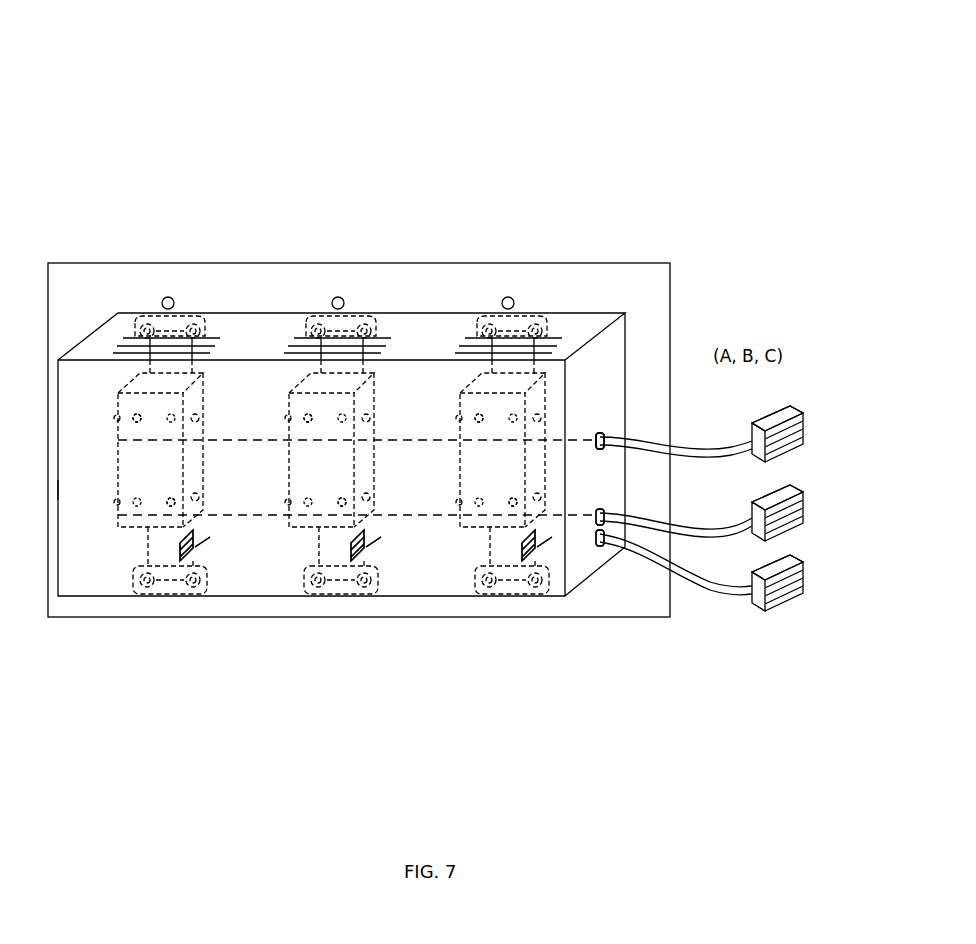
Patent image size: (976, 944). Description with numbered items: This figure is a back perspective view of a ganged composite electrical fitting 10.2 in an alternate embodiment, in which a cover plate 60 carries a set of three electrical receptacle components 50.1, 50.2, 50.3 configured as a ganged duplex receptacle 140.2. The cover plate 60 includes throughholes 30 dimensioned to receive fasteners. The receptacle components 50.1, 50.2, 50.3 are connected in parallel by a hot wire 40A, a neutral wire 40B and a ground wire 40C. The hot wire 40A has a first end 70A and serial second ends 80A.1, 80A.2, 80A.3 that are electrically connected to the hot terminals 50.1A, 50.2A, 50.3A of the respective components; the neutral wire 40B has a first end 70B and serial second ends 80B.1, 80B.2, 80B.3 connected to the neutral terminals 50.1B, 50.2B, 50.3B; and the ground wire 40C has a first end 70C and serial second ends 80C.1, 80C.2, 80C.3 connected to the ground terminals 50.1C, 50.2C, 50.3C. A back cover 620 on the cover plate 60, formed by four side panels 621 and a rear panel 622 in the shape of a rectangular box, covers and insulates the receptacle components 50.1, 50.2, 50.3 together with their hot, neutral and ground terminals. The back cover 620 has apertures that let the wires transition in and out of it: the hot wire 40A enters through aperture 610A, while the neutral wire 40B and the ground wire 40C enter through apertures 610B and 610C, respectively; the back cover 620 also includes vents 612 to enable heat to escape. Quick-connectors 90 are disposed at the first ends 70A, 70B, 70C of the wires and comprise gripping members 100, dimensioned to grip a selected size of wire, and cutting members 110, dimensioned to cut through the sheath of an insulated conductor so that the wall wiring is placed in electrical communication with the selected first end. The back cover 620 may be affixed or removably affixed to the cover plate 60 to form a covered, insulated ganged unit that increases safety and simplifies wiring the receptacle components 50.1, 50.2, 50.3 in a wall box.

The ganged duplex receptacle 140.2 is at (105, 95).
The ganged composite electrical fitting 10.2 is at (121, 19).
The cover plate 60 is at (643, 278).
The vents 612 is at (132, 338).
The throughholes 30 is at (170, 297).
The electrical receptacle component 50.1 is at (172, 476).
The electrical receptacle component 50.2 is at (343, 476).
The electrical receptacle component 50.3 is at (514, 476).
The hot terminal 50.1A is at (137, 418).
The serial second end 80A.1 is at (124, 593).
The neutral terminal 50.1B is at (171, 502).
The serial second end 80B.1 is at (175, 659).
The ground terminal 50.1C is at (195, 548).
The serial second end 80C.1 is at (213, 616).
The hot terminal 50.2A is at (308, 418).
The serial second end 80A.2 is at (274, 586).
The neutral terminal 50.2B is at (342, 502).
The serial second end 80B.2 is at (318, 652).
The ground terminal 50.2C is at (366, 548).
The serial second end 80C.2 is at (384, 616).
The hot terminal 50.3A is at (479, 418).
The serial second end 80A.3 is at (444, 586).
The neutral terminal 50.3B is at (513, 502).
The serial second end 80B.3 is at (487, 652).
The ground terminal 50.3C is at (537, 548).
The serial second end 80C.3 is at (554, 643).
The hot wire 40A is at (746, 449).
The first end 70A is at (765, 426).
The neutral wire 40B is at (748, 527).
The first end 70B is at (763, 506).
The ground wire 40C is at (743, 597).
The first end 70C is at (765, 603).
The quick-connectors 90 is at (800, 553).
The gripping members 100 is at (766, 418).
The cutting members 110 is at (778, 453).
The back cover 620 is at (597, 433).
The side panels 621 is at (702, 338).
The rear panel 622 is at (76, 597).
The aperture 610A is at (605, 358).
The aperture 610B is at (598, 523).
The aperture 610C is at (600, 545).